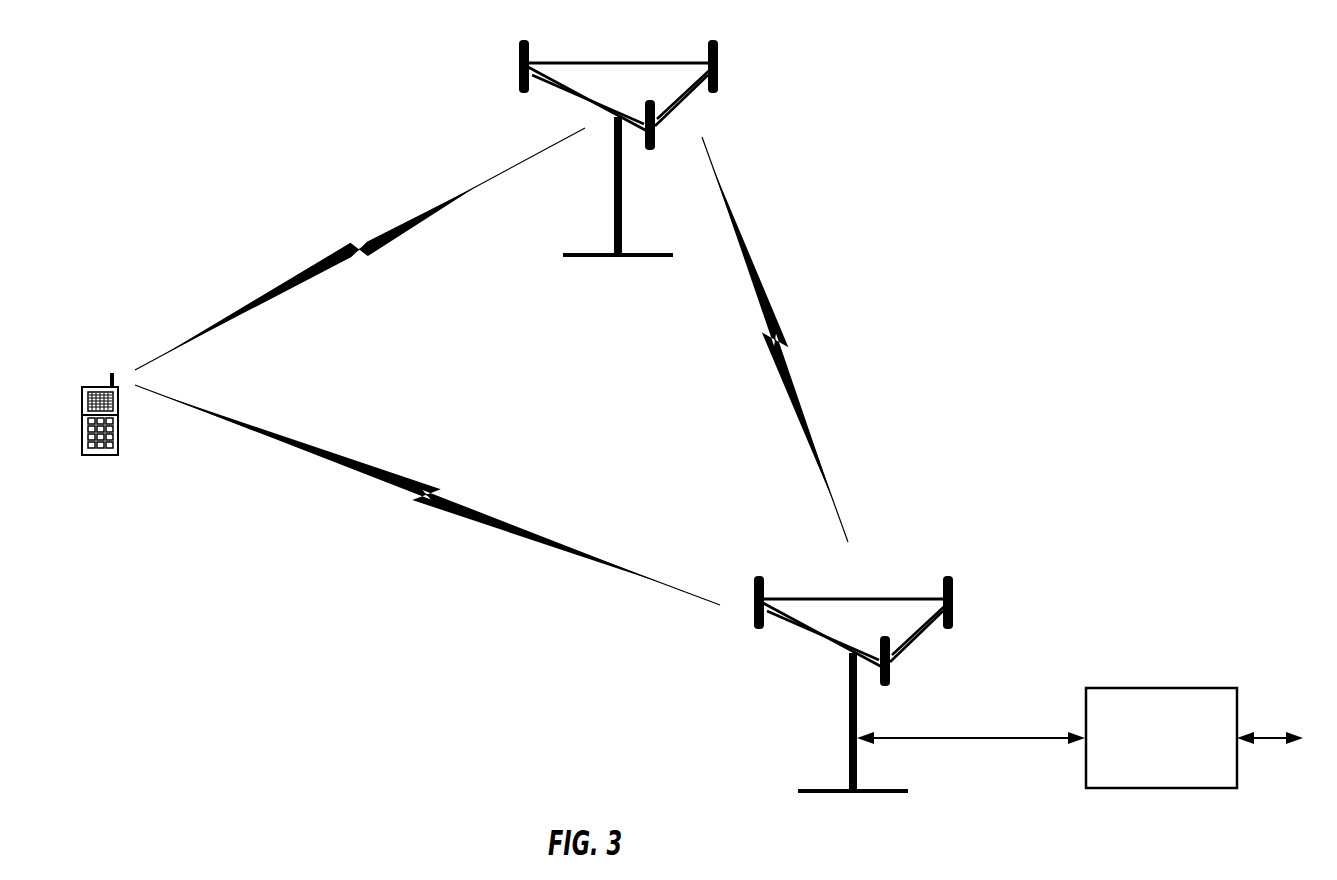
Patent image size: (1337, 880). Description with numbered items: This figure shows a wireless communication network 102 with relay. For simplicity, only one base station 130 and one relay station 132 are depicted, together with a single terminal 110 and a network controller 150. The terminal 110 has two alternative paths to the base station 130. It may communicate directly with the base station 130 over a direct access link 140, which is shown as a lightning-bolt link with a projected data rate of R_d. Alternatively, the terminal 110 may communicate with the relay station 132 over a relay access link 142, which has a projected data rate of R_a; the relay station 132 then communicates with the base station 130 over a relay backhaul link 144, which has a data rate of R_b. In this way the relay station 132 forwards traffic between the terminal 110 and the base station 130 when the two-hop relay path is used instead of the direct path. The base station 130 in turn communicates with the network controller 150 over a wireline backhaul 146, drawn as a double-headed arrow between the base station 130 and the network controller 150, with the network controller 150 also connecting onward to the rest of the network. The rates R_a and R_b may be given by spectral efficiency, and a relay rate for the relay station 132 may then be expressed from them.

The wireless communication network 102 is at (1128, 115).
The terminal 110 is at (98, 385).
The base station 130 is at (848, 598).
The relay station 132 is at (614, 62).
The direct access link 140 is at (417, 480).
The relay access link 142 is at (386, 222).
The relay backhaul link 144 is at (785, 379).
The wireline backhaul 146 is at (965, 736).
The network controller 150 is at (1158, 687).